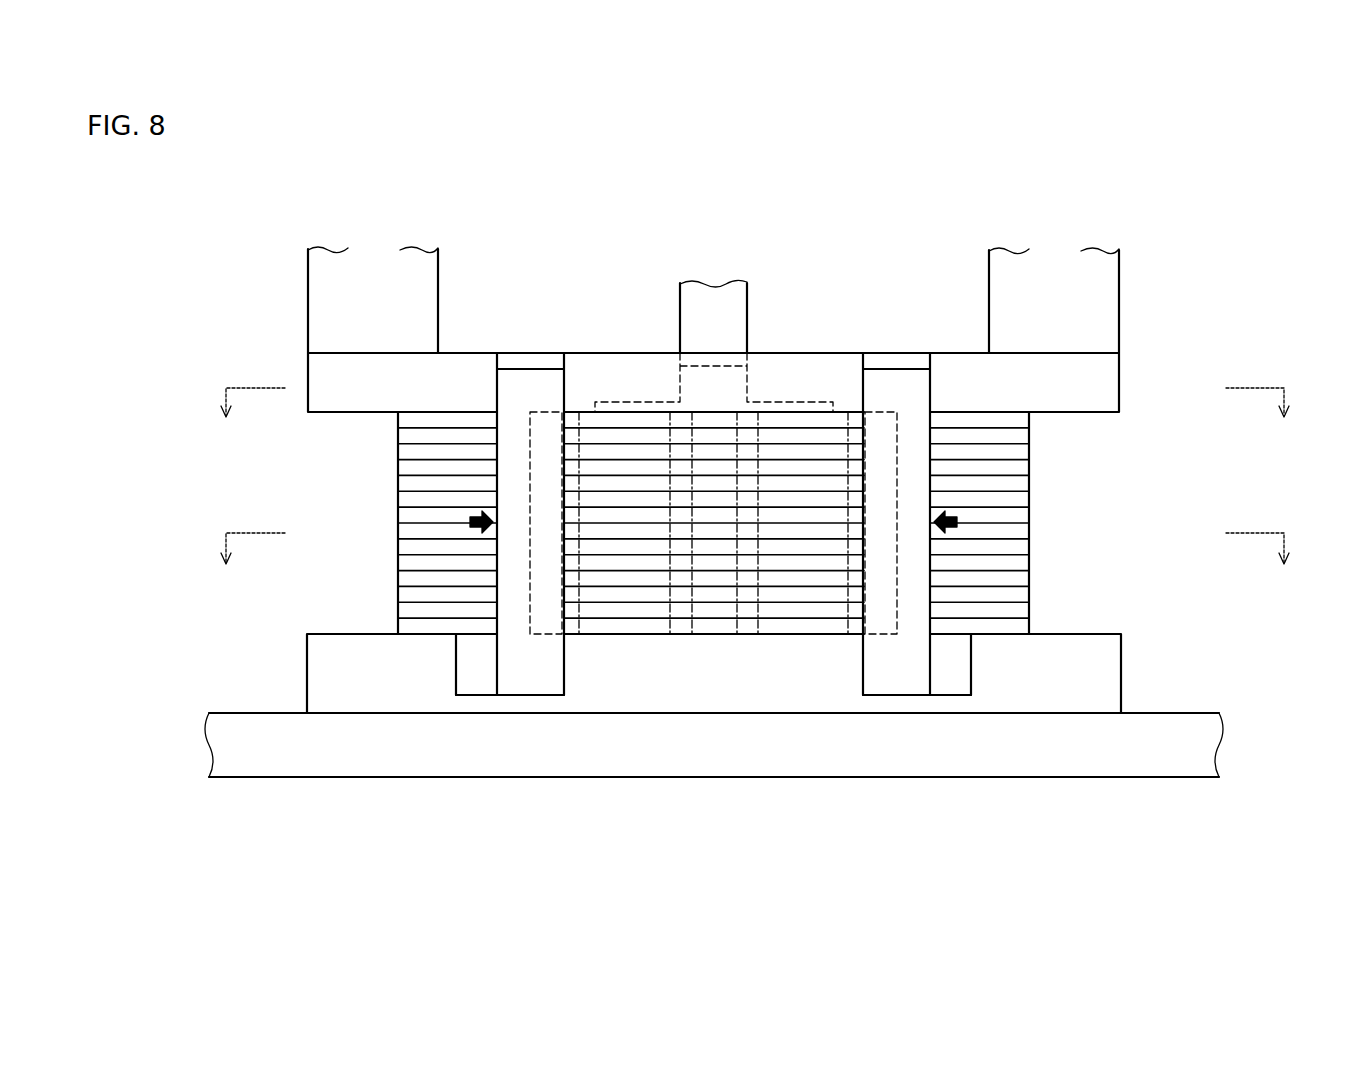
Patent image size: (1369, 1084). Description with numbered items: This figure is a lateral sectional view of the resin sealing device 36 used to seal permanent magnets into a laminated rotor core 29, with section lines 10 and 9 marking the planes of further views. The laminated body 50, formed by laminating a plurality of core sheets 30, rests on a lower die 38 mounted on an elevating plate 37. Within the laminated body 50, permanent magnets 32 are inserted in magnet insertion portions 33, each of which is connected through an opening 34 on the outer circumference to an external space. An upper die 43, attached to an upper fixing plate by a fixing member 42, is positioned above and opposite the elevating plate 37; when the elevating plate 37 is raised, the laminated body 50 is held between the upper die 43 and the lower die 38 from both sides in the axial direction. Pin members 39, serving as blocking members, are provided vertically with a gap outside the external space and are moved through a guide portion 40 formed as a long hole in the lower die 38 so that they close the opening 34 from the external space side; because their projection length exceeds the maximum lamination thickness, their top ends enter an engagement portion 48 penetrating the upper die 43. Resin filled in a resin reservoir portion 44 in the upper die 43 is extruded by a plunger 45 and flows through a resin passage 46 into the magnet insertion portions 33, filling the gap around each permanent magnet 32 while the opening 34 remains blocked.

The section line IX-IX 9 is at (755, 568).
The section line X-X 10 is at (755, 423).
The laminated rotor core 29 is at (1076, 524).
The core sheet 30 is at (1018, 448).
The permanent magnet 32 is at (617, 610).
The magnet insertion portion 33 is at (683, 637).
The opening 34 is at (558, 590).
The resin sealing device 36 is at (249, 278).
The elevating plate 37 is at (1182, 760).
The lower die 38 is at (1100, 670).
The pin member 39 is at (530, 675).
The guide portion 40 is at (472, 675).
The fixing member 42 is at (1097, 292).
The upper die 43 is at (1097, 378).
The resin reservoir portion 44 is at (748, 374).
The plunger 45 is at (698, 308).
The resin passage 46 is at (600, 392).
The engagement portion 48 is at (500, 390).
The laminated body 50 is at (380, 494).